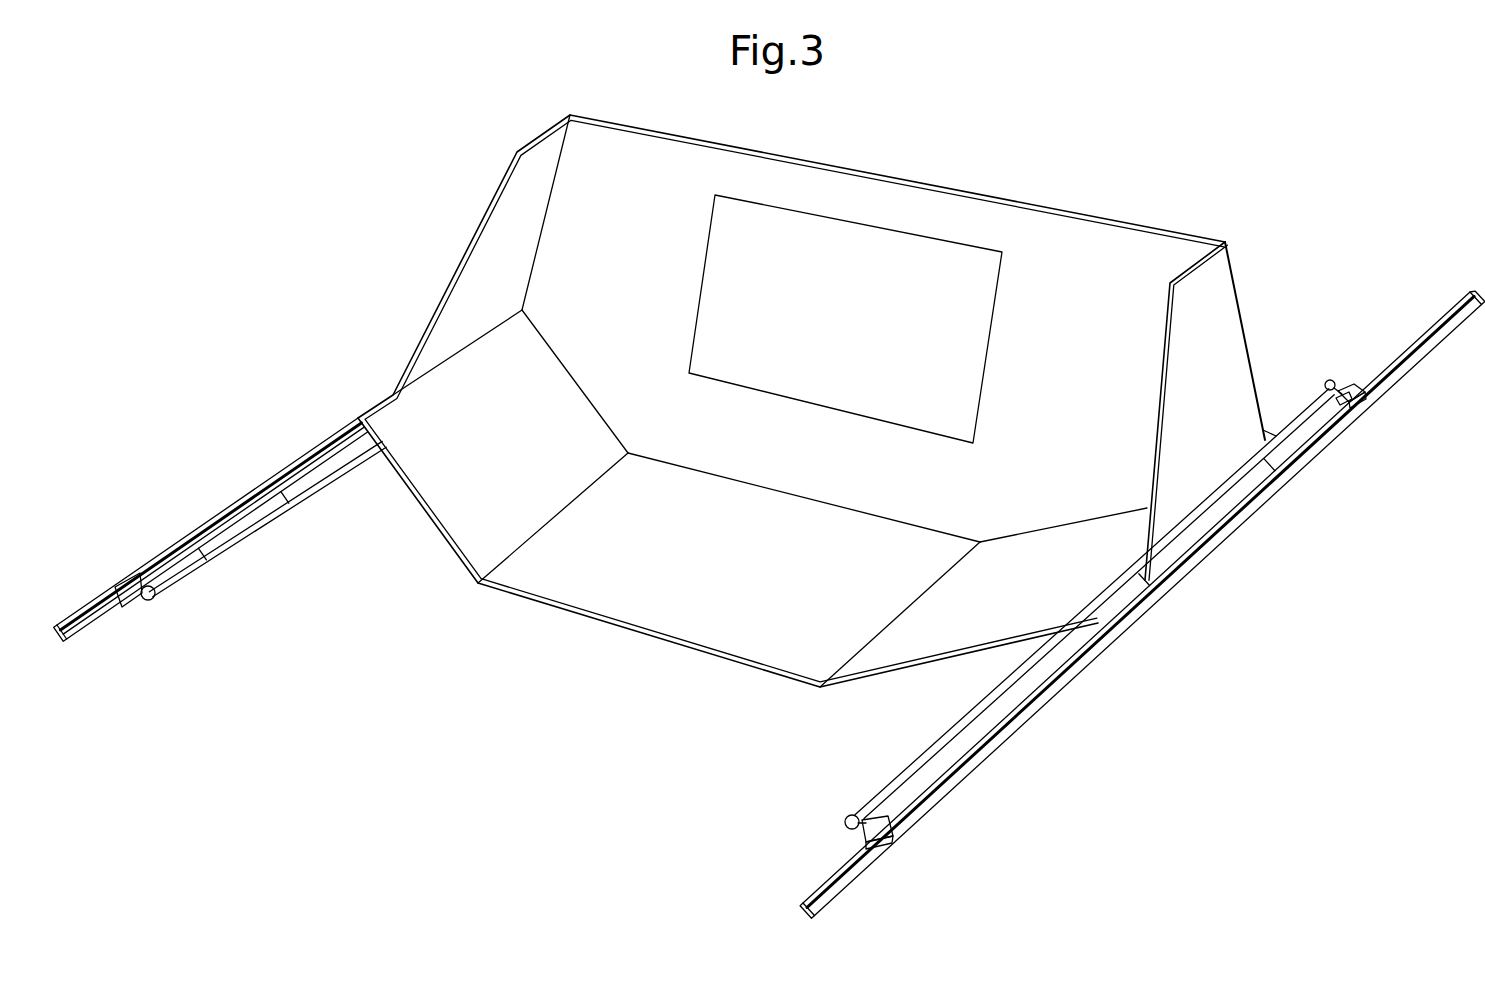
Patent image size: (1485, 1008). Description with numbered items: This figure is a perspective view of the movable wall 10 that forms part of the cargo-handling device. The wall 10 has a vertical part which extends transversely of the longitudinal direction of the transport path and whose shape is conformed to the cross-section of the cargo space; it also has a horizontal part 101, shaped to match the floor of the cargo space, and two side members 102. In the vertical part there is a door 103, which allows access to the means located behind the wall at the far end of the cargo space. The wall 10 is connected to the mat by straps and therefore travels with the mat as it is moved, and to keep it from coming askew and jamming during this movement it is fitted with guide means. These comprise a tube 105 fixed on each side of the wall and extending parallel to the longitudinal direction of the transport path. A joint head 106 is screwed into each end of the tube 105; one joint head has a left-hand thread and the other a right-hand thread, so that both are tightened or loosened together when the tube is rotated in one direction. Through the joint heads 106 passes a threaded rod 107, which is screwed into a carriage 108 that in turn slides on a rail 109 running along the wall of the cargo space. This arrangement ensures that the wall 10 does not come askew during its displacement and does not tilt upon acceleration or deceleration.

The wall 10 is at (1032, 237).
The horizontal part 101 is at (726, 588).
The side members 102 is at (496, 234).
The door 103 is at (846, 332).
The tube 105 is at (1246, 467).
The joint head 106 is at (1332, 380).
The threaded rod 107 is at (1346, 377).
The carriage 108 is at (1360, 400).
The rail 109 is at (1335, 425).